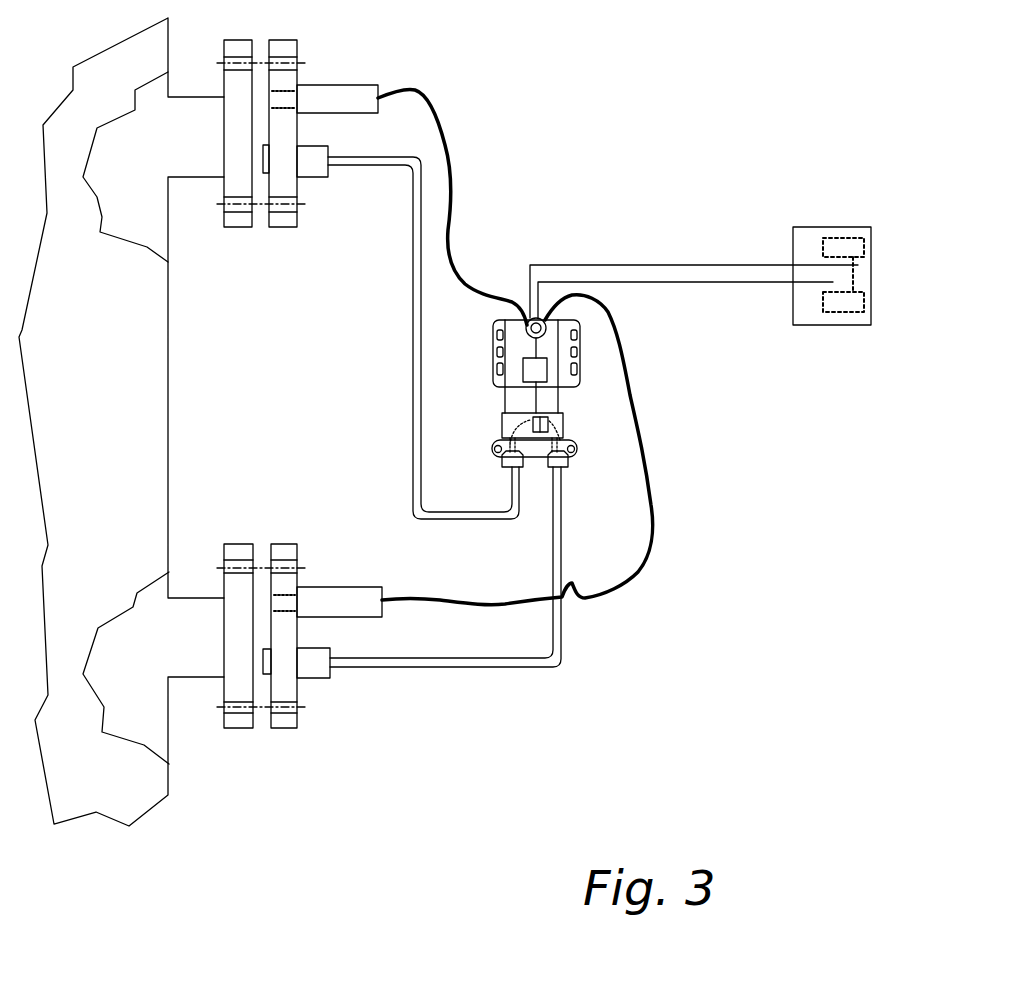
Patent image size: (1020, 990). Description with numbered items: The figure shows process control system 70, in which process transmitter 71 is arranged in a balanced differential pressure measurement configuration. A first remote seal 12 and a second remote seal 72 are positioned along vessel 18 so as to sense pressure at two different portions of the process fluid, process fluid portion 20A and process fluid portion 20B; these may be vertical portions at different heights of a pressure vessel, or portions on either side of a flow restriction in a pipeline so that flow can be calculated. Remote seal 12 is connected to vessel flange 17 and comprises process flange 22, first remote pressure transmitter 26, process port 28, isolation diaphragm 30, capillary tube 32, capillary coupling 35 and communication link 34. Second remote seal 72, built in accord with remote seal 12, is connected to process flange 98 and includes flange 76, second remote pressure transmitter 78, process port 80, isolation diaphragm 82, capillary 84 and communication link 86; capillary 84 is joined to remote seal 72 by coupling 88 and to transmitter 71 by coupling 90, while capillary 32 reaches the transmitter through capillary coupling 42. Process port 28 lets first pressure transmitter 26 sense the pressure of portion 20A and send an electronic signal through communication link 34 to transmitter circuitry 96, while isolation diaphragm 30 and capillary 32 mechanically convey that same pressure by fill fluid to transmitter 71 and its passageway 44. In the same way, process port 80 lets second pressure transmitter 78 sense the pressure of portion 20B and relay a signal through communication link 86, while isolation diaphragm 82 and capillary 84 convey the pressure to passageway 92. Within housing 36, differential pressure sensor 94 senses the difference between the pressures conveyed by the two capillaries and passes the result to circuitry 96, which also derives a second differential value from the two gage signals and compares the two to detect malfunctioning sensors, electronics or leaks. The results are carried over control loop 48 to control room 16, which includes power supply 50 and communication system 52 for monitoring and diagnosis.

The remote seal 12 is at (292, 287).
The control room 16 is at (821, 277).
The vessel flange 17 is at (240, 227).
The vessel 18 is at (128, 418).
The process fluid portion 20A is at (149, 171).
The process fluid portion 20B is at (166, 651).
The process flange 22 is at (292, 227).
The first remote pressure transmitter 26 is at (383, 85).
The process port 28 is at (286, 99).
The isolation diaphragm 30 is at (263, 156).
The capillary tube 32 is at (460, 518).
The communication link 34 is at (417, 92).
The capillary coupling 35 is at (323, 177).
The housing 36 is at (496, 363).
The capillary coupling 42 is at (507, 463).
The passageway 44 is at (502, 422).
The control loop 48 is at (623, 265).
The power supply 50 is at (840, 237).
The communication system 52 is at (838, 312).
The process control system 70 is at (607, 120).
The process transmitter 71 is at (529, 393).
The second remote seal 72 is at (311, 528).
The flange 76 is at (286, 676).
The second remote pressure transmitter 78 is at (323, 587).
The process port 80 is at (282, 594).
The isolation diaphragm 82 is at (263, 658).
The capillary 84 is at (487, 668).
The communication link 86 is at (652, 519).
The coupling 88 is at (317, 679).
The coupling 90 is at (562, 462).
The passageway 92 is at (563, 418).
The differential pressure sensor 94 is at (550, 420).
The transmitter circuitry 96 is at (547, 369).
The process flange 98 is at (240, 686).